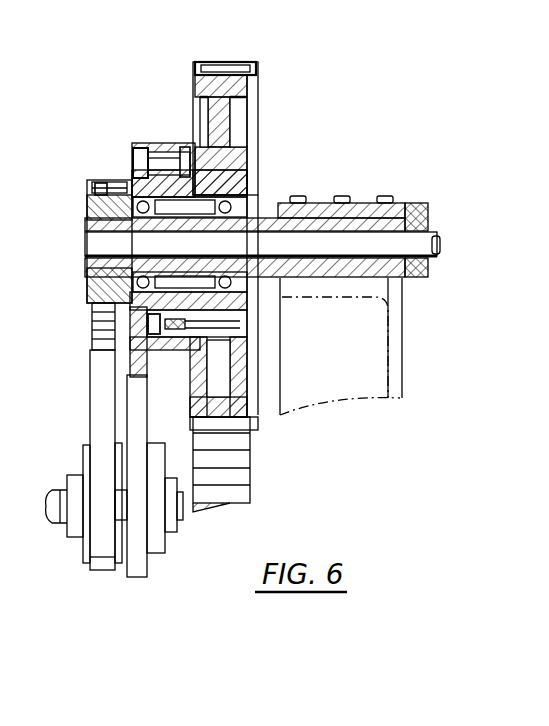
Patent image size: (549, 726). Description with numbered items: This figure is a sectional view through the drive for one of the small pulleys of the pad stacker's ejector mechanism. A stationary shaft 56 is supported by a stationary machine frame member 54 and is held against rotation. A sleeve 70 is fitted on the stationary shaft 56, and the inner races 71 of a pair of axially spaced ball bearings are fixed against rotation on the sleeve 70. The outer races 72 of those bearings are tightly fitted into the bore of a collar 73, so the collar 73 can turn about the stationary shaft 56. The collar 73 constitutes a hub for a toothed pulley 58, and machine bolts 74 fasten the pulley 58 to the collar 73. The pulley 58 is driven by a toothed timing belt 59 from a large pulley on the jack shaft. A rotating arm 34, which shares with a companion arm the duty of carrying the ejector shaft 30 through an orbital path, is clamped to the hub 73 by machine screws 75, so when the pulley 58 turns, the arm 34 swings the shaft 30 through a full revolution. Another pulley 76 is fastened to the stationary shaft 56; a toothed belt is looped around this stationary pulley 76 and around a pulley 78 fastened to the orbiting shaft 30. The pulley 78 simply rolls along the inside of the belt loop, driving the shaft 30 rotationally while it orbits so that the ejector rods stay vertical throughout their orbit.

The shaft 30 is at (57, 525).
The swingable arm 34 is at (137, 578).
The stationary machine frame member 54 is at (403, 385).
The stationary shaft 56 is at (340, 245).
The toothed pulley 58 is at (250, 82).
The toothed belt 59 is at (247, 488).
The sleeve 70 is at (107, 265).
The inner races 71 is at (107, 238).
The outer races 72 is at (134, 176).
The collar 73 is at (175, 145).
The machine bolts 74 is at (250, 327).
The machine screws 75 is at (158, 163).
The pulley 76 is at (86, 290).
The pulley 78 is at (88, 453).